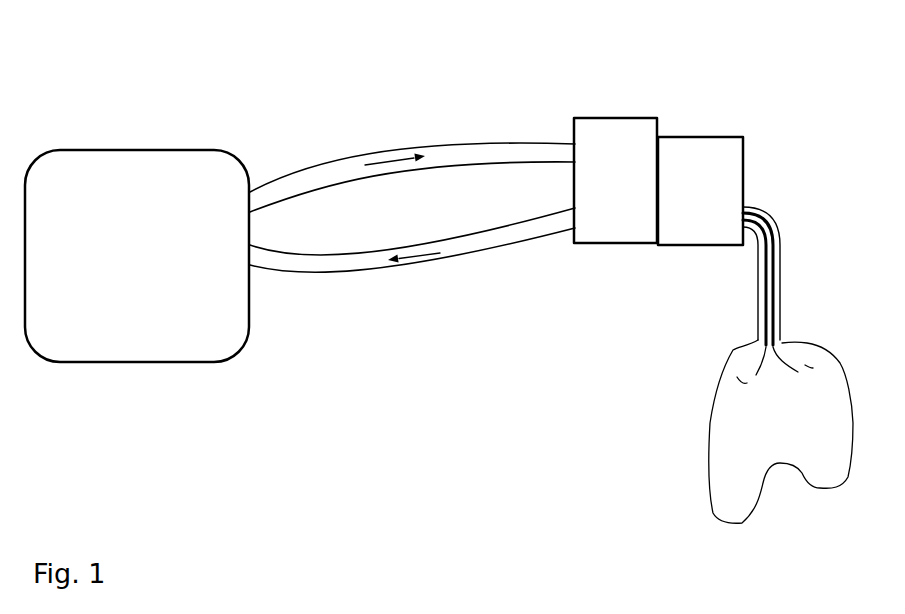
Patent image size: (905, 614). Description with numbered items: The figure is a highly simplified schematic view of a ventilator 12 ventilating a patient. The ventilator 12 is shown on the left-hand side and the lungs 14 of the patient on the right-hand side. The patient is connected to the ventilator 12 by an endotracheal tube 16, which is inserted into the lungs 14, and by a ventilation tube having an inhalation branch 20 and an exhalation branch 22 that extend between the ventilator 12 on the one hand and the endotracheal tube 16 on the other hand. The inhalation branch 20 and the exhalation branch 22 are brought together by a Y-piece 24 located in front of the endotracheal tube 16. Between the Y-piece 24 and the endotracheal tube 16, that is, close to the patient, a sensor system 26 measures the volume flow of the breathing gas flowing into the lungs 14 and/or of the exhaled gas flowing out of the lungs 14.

The ventilator 12 is at (148, 363).
The lungs 14 is at (702, 468).
The endotracheal tube 16 is at (777, 320).
The inhalation branch 20 is at (445, 145).
The exhalation branch 22 is at (525, 248).
The Y-piece 24 is at (612, 118).
The sensor system 26 is at (742, 137).